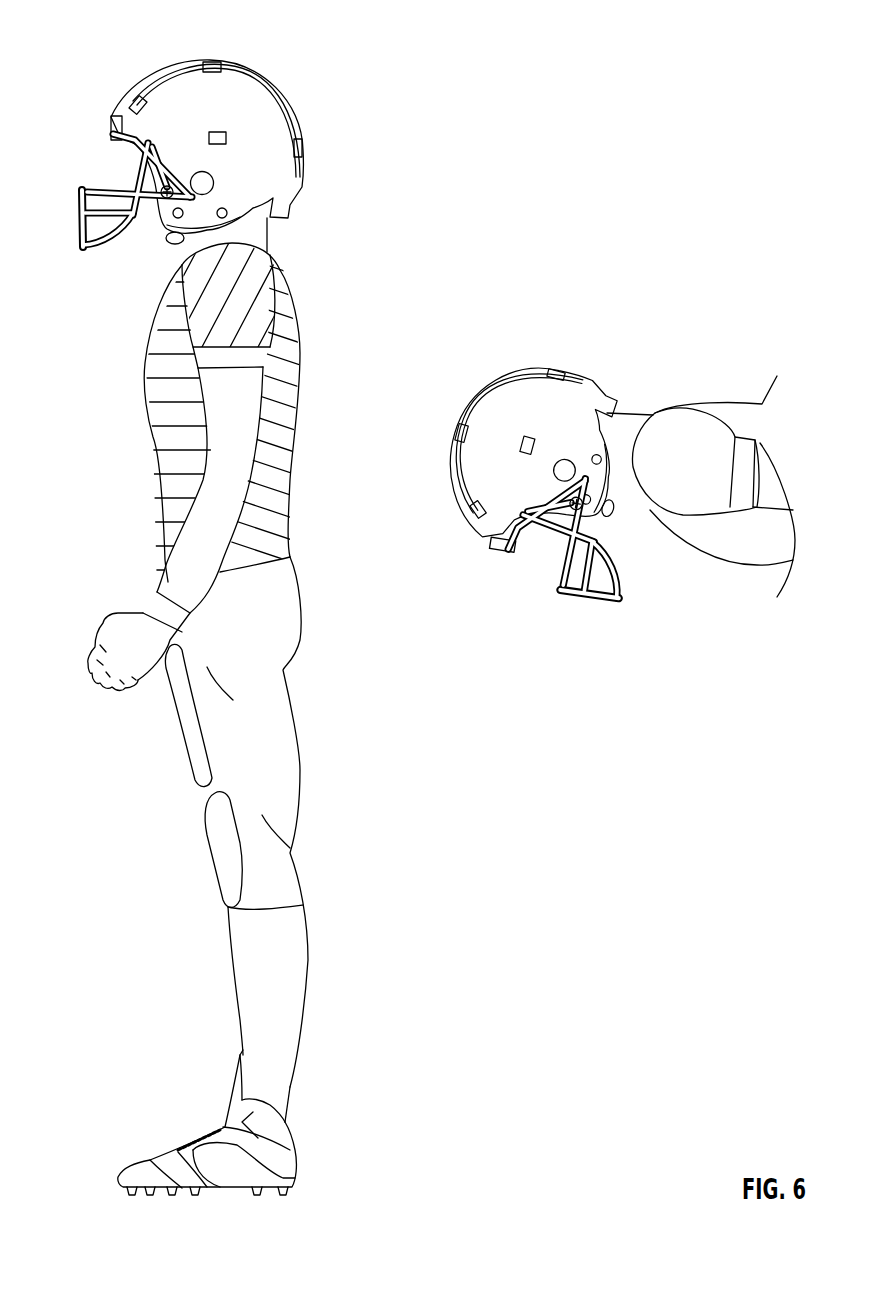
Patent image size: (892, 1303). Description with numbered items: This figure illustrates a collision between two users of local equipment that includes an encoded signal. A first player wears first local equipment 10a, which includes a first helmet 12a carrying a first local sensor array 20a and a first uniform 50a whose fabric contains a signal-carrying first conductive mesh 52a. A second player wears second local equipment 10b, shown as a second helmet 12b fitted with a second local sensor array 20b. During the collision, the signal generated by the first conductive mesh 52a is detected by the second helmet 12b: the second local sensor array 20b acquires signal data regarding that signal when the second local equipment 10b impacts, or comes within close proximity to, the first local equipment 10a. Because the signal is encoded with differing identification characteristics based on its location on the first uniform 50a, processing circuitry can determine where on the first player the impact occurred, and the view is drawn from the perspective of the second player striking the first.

The first local equipment 10a is at (236, 45).
The first helmet 12a is at (258, 101).
The first local sensor array 20a is at (213, 131).
The first uniform 50a is at (297, 288).
The first conductive mesh 52a is at (288, 368).
The second local equipment 10b is at (589, 311).
The second helmet 12b is at (586, 389).
The second local sensor array 20b is at (527, 447).